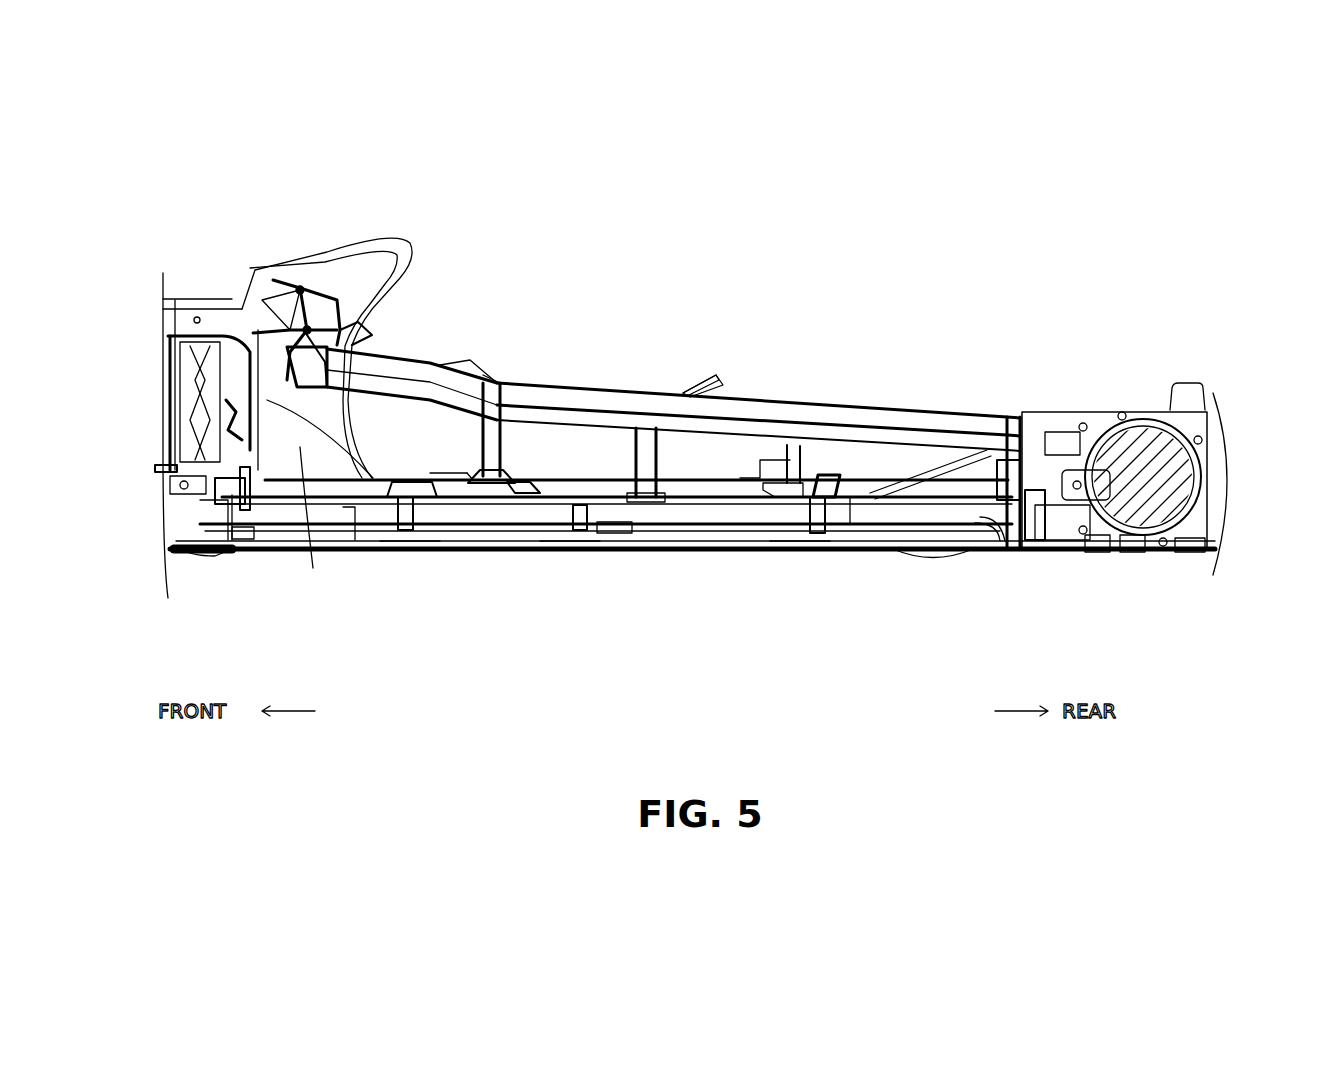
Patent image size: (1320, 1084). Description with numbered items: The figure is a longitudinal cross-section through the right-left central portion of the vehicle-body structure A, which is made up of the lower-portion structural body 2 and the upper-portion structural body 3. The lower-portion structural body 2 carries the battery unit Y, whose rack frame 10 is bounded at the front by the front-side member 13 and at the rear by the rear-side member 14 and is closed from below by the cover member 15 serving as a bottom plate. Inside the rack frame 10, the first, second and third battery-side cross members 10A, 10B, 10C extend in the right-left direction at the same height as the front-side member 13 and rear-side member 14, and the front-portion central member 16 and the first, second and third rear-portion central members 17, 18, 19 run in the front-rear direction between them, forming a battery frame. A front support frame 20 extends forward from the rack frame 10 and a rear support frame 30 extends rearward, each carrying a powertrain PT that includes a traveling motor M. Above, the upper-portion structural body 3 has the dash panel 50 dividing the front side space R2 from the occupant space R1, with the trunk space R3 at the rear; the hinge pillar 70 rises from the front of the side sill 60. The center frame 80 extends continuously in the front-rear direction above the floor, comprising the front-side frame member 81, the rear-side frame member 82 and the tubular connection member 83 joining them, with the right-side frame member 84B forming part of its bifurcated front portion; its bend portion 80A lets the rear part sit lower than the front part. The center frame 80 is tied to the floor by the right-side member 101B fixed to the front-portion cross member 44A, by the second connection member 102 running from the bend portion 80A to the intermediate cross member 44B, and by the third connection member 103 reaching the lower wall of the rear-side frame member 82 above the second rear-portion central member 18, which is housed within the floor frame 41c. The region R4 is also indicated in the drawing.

The lower-portion structural body 2 is at (290, 566).
The upper-portion structural body 3 is at (340, 230).
The rack frame 10 is at (176, 508).
The first battery-side cross member 10A is at (407, 541).
The second battery-side cross member 10B is at (570, 541).
The third battery-side cross member 10C is at (797, 541).
The front-side member 13 is at (210, 549).
The rear-side member 14 is at (1010, 556).
The cover member 15 is at (837, 557).
The front-portion central member 16 is at (330, 470).
The first rear-portion central member 17 is at (487, 541).
The second rear-portion central member 18 is at (707, 541).
The third rear-portion central member 19 is at (897, 556).
The front support frame 20 is at (168, 556).
The rear support frame 30 is at (1085, 556).
The floor frame 41c is at (677, 467).
The front-portion cross member 44A is at (270, 512).
The intermediate cross member 44B is at (540, 478).
The dash panel 50 is at (170, 448).
The side sill 60 is at (740, 478).
The hinge pillar 70 is at (304, 521).
The center frame 80 is at (862, 410).
The bend portion 80A is at (500, 380).
The front-side frame member 81 is at (450, 360).
The rear-side frame member 82 is at (790, 410).
The tubular connection member 83 is at (505, 398).
The right-side frame member 84B is at (385, 345).
The right-side member 101B is at (350, 508).
The second connection member 102 is at (518, 541).
The third connection member 103 is at (657, 541).
The vehicle-body structure A is at (848, 305).
The traveling motor M is at (1200, 443).
The powertrain PT is at (1192, 522).
The occupant space R1 is at (474, 358).
The front side space R2 is at (193, 281).
The trunk space R3 is at (1116, 386).
The region R4 is at (1213, 450).
The battery unit Y is at (458, 541).